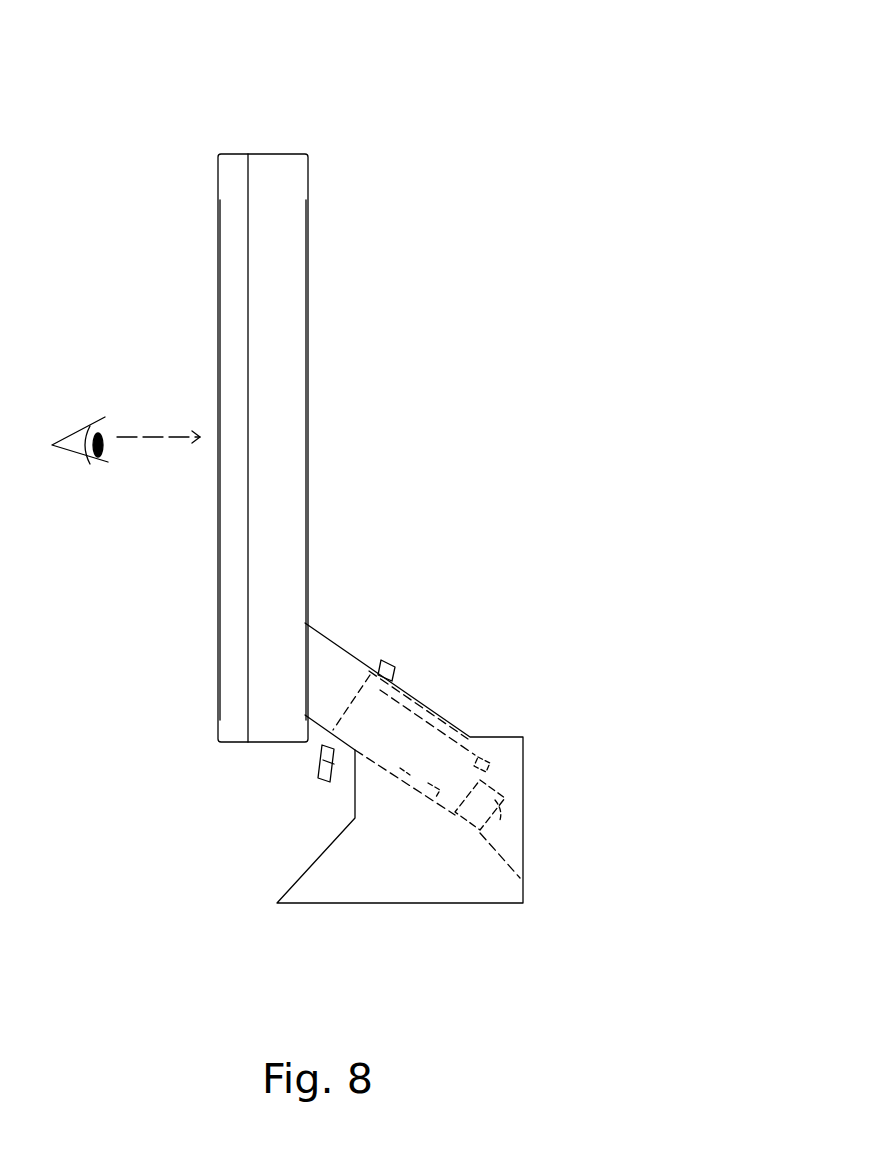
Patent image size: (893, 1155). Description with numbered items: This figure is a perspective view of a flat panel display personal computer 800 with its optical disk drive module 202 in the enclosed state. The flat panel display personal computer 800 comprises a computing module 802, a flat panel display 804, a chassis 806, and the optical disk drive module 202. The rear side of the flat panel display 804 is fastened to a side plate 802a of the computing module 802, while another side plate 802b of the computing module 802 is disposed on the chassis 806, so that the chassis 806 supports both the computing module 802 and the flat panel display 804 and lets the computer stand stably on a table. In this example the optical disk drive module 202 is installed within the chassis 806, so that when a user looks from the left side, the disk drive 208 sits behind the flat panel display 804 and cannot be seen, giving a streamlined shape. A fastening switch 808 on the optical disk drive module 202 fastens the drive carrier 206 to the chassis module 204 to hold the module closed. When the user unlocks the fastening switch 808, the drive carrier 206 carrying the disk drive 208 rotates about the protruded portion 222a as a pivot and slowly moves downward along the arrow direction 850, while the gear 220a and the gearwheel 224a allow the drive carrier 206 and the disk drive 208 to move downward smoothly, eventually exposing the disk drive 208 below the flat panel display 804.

The flat panel display personal computer 800 is at (567, 170).
The computing module 802 is at (282, 150).
The side plate 802a is at (248, 208).
The side plate 802b is at (310, 208).
The flat panel display 804 is at (237, 150).
The chassis 806 is at (523, 884).
The fastening switch 808 is at (388, 662).
The optical disk drive module 202 is at (475, 729).
The chassis module 204 is at (513, 733).
The drive carrier 206 is at (420, 703).
The disk drive 208 is at (407, 767).
The gear 220a is at (500, 777).
The protruded portion 222a is at (433, 787).
The gearwheel 224a is at (520, 802).
The arrow direction 850 is at (320, 766).